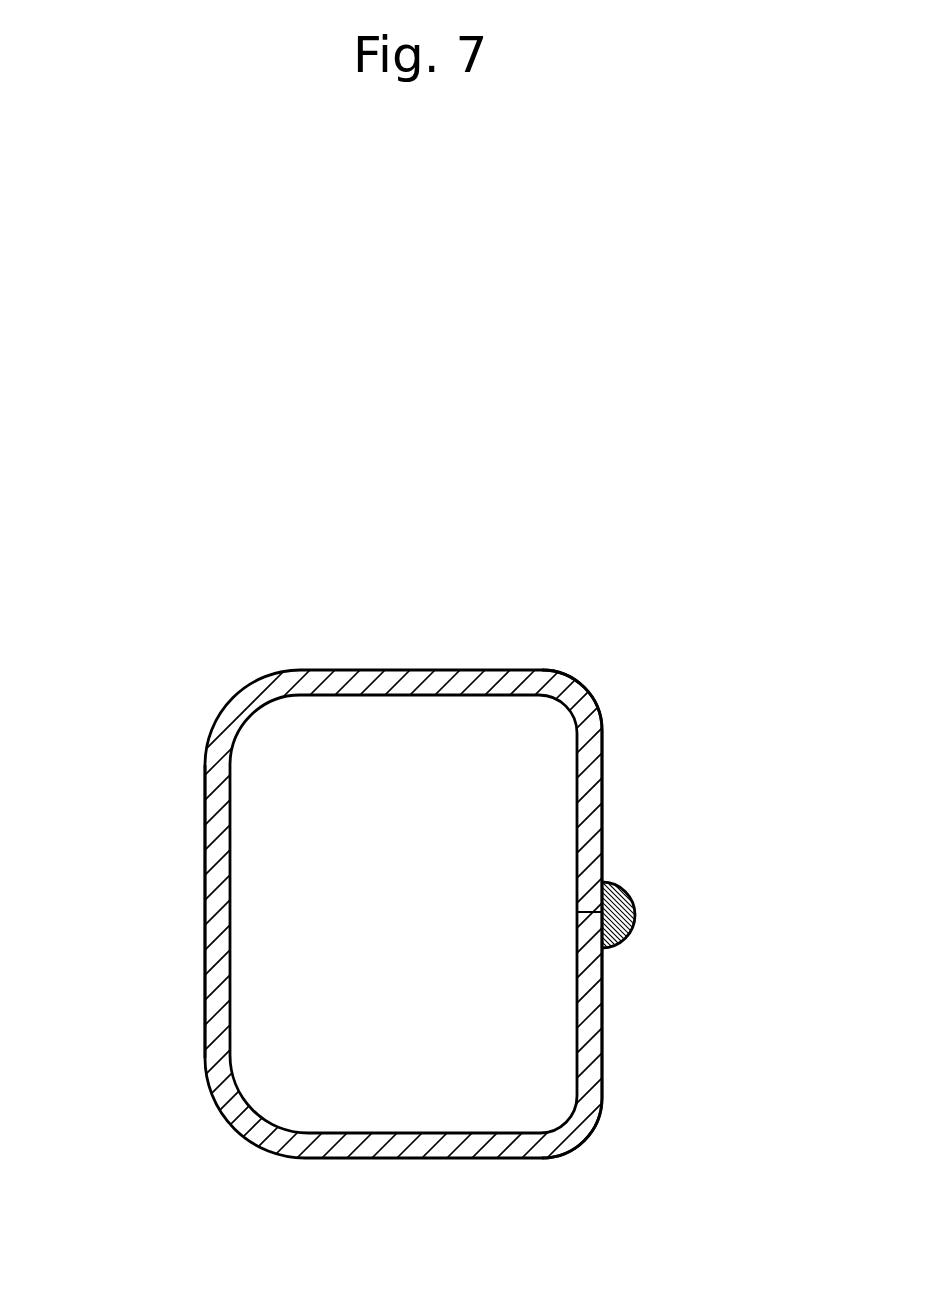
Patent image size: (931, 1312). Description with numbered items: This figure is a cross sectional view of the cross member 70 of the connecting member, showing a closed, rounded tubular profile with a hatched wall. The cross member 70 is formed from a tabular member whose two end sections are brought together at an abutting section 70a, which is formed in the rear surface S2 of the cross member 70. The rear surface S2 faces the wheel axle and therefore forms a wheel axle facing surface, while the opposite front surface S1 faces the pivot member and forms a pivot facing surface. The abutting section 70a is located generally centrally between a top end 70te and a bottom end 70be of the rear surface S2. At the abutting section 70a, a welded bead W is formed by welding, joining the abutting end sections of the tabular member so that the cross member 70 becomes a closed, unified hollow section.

The cross member 70 is at (613, 544).
The top end 70te is at (588, 697).
The bottom end 70be is at (590, 1118).
The abutting section 70a is at (577, 927).
The welded bead W is at (636, 918).
The front surface S1 is at (205, 880).
The rear surface S2 is at (617, 830).